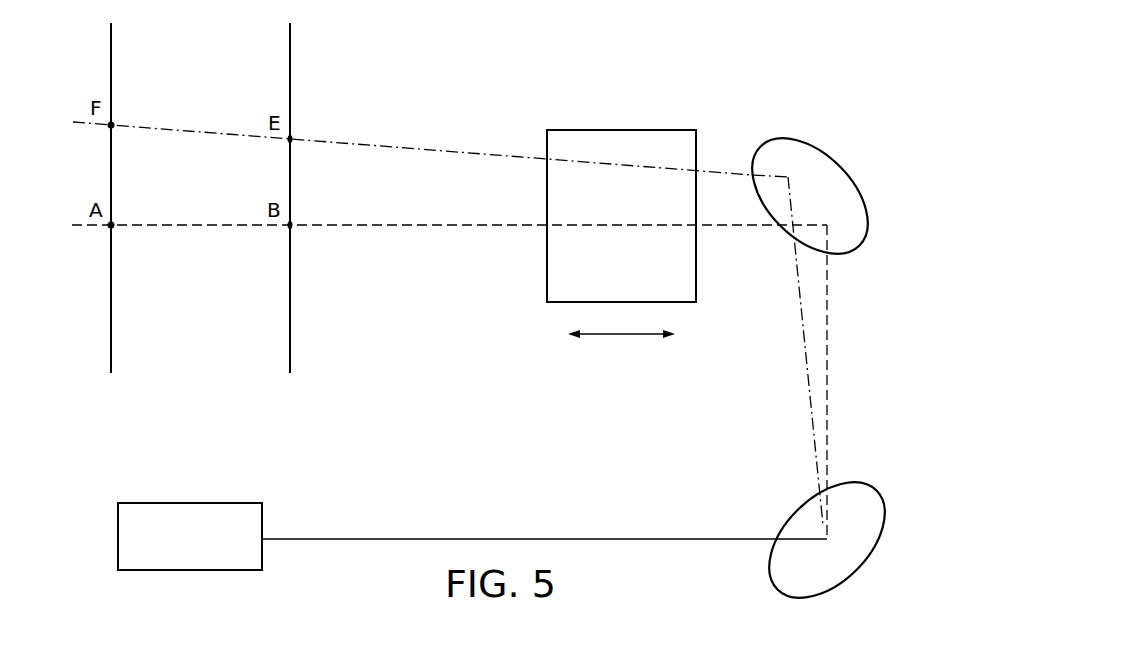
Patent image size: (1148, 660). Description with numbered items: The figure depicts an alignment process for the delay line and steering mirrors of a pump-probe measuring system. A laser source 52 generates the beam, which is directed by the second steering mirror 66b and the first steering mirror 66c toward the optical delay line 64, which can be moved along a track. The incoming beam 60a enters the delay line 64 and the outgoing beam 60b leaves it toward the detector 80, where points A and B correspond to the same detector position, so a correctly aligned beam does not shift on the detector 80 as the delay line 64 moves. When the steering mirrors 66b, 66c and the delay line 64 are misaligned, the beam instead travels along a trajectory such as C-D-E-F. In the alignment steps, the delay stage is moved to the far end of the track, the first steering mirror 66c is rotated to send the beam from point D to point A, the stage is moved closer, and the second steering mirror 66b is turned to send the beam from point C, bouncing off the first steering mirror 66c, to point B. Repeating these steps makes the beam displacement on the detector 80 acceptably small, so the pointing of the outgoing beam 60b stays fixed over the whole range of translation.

The detector 80 is at (112, 38).
The outgoing beam 60b is at (432, 148).
The incoming beam 60a is at (806, 328).
The optical delay line 64 is at (716, 129).
The mirror M1 66c is at (822, 196).
The mirror M2 66b is at (827, 544).
The laser source 52 is at (187, 503).